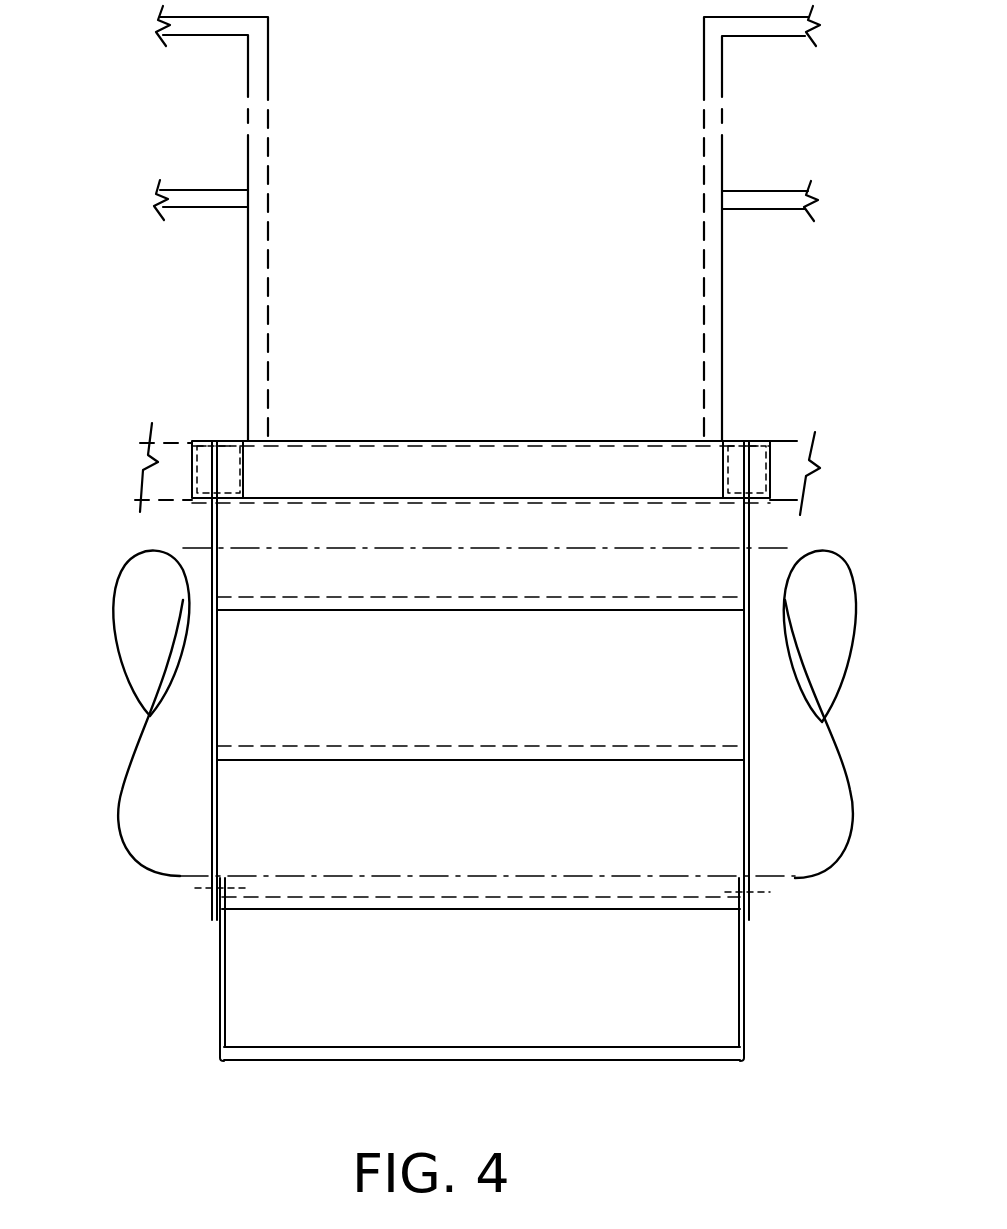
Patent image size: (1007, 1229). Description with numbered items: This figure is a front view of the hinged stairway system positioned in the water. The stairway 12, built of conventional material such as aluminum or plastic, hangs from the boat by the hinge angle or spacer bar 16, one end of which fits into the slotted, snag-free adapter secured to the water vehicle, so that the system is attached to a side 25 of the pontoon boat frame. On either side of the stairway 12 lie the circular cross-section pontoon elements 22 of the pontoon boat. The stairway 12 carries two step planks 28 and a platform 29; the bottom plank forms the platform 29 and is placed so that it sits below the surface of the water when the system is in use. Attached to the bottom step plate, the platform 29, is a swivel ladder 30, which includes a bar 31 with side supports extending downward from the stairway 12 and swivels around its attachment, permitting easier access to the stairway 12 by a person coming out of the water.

The stairway 12 is at (211, 724).
The hinge angle or spacer bar 16 is at (190, 471).
The pontoon element 22 is at (150, 636).
The side 25 is at (788, 447).
The step plank 28 is at (738, 759).
The platform 29 is at (745, 911).
The swivel ladder 30 is at (745, 980).
The bar 31 is at (722, 1055).